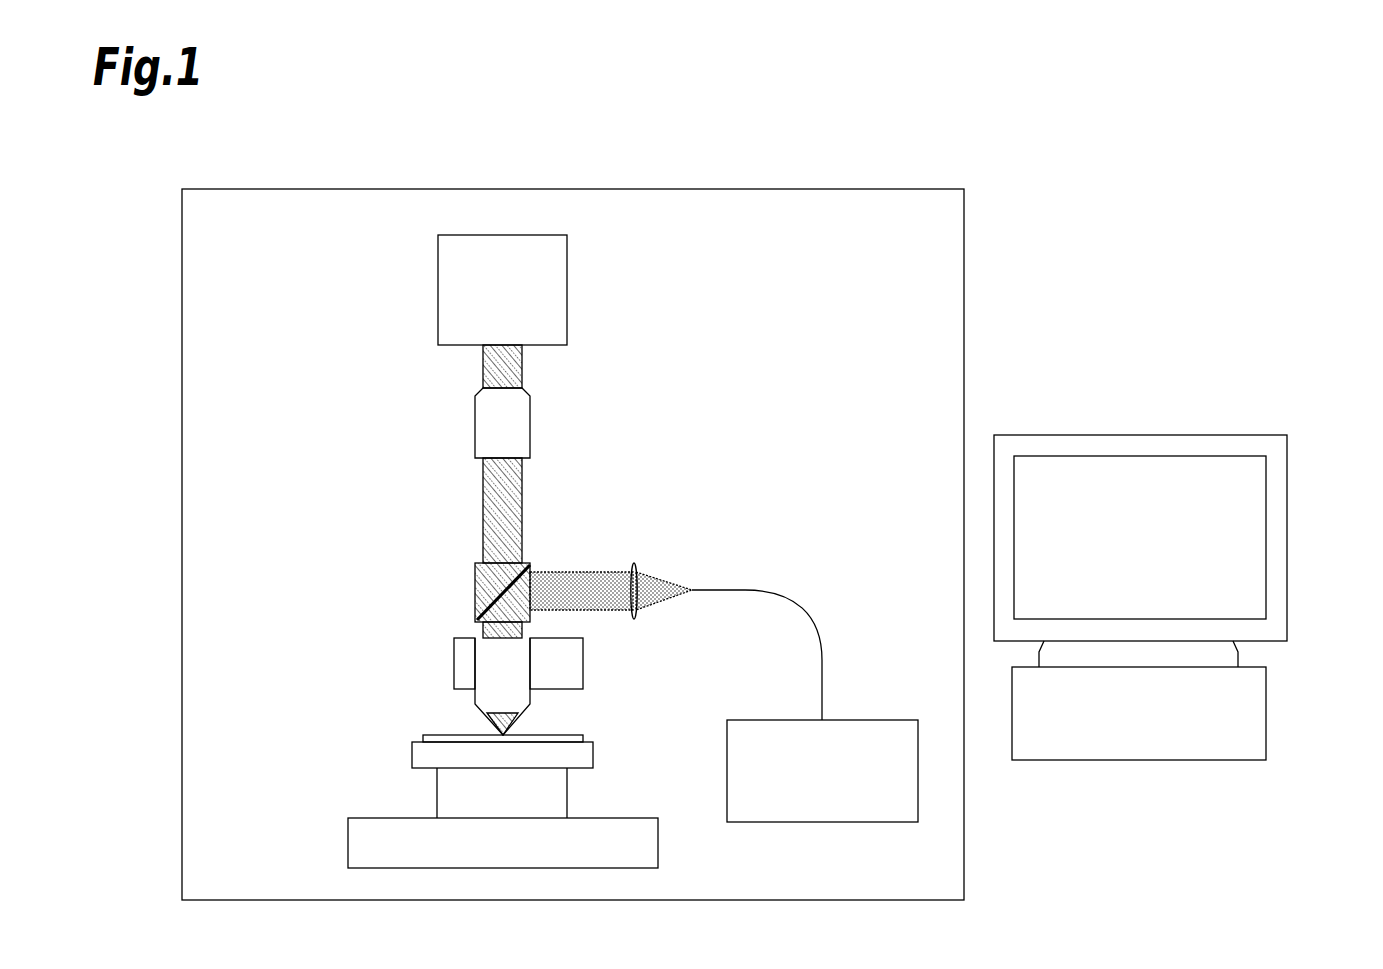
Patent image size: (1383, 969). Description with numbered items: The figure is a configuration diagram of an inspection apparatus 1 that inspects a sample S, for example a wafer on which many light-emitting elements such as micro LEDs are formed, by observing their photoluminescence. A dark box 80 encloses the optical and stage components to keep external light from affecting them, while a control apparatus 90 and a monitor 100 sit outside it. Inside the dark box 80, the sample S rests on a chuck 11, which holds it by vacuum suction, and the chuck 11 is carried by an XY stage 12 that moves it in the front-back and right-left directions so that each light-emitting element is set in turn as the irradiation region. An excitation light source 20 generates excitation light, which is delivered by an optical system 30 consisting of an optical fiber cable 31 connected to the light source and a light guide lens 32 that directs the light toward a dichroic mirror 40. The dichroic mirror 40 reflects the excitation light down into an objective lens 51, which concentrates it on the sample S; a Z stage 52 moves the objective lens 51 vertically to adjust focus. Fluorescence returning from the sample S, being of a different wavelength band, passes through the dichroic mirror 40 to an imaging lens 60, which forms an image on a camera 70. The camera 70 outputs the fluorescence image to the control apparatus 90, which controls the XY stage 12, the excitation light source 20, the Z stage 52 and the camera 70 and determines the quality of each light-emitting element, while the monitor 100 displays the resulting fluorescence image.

The inspection apparatus 1 is at (368, 132).
The dark box 80 is at (964, 290).
The camera 70 is at (567, 277).
The imaging lens 60 is at (530, 418).
The dichroic mirror 40 is at (528, 562).
The optical system 30 is at (772, 491).
The optical fiber cable 31 is at (725, 590).
The light guide lens 32 is at (634, 562).
The excitation light source 20 is at (872, 720).
The Z stage 52 is at (583, 663).
The objective lens 51 is at (530, 695).
The sample S is at (437, 734).
The chuck 11 is at (412, 757).
The XY stage 12 is at (437, 790).
The monitor 100 is at (1287, 534).
The control apparatus 90 is at (1266, 708).